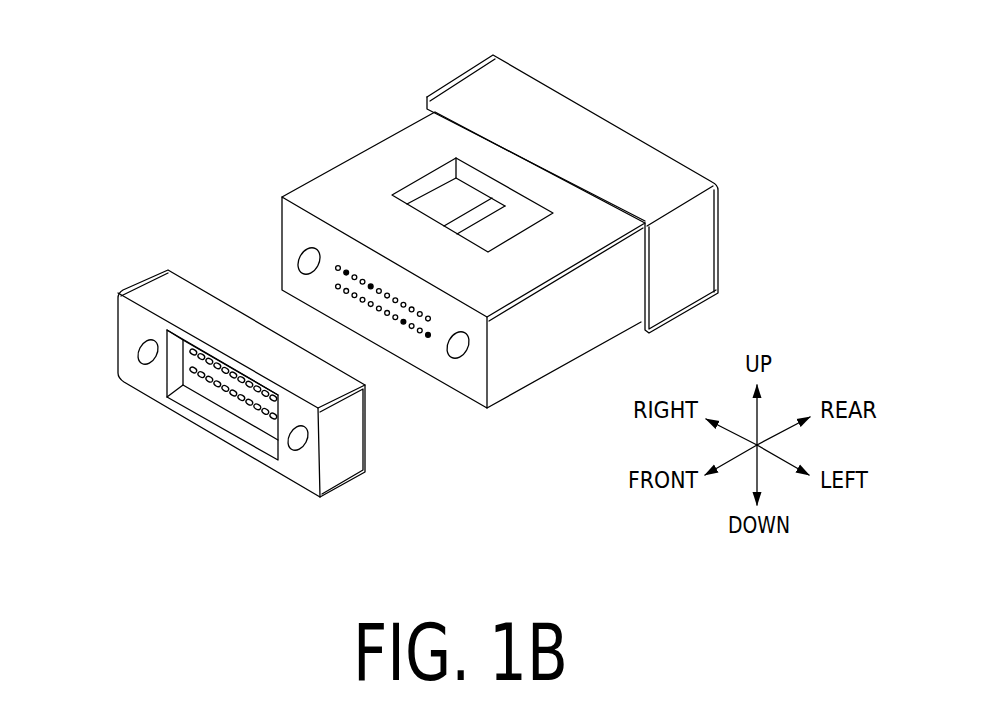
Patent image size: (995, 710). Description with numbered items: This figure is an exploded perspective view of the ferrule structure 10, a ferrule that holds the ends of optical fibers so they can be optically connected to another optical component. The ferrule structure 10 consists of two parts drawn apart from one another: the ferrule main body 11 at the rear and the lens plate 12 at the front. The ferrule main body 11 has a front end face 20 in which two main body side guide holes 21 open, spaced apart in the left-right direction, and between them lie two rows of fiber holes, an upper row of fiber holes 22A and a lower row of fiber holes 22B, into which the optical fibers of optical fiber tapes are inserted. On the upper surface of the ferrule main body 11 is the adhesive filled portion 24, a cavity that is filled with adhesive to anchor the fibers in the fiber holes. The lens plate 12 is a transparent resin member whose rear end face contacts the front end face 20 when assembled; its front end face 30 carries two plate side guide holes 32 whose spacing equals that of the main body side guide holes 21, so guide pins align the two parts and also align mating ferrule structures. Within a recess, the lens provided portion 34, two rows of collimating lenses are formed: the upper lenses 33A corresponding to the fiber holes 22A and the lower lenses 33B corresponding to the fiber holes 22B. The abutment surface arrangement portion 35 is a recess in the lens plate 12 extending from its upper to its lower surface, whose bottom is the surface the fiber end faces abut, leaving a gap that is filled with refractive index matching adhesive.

The ferrule structure 10 is at (382, 282).
The ferrule main body 11 is at (317, 94).
The lens plate 12 is at (111, 251).
The front end face 20 is at (293, 220).
The main body side guide holes 21 is at (303, 260).
The fiber hole 22A is at (372, 286).
The fiber hole 22B is at (403, 323).
The adhesive filled portion 24 is at (441, 197).
The front end face 30 is at (128, 320).
The plate side guide holes 32 is at (143, 358).
The upper lens 33A is at (233, 375).
The lower lens 33B is at (253, 408).
The lens provided portion 34 is at (199, 408).
The abutment surface arrangement portion 35 is at (236, 305).